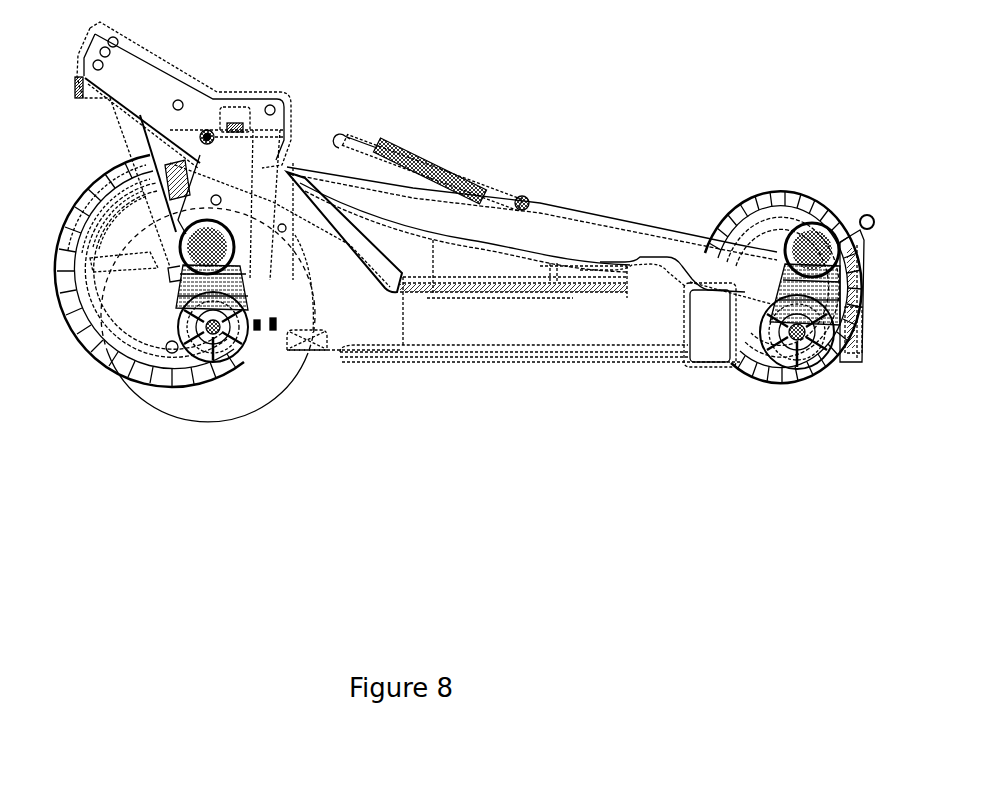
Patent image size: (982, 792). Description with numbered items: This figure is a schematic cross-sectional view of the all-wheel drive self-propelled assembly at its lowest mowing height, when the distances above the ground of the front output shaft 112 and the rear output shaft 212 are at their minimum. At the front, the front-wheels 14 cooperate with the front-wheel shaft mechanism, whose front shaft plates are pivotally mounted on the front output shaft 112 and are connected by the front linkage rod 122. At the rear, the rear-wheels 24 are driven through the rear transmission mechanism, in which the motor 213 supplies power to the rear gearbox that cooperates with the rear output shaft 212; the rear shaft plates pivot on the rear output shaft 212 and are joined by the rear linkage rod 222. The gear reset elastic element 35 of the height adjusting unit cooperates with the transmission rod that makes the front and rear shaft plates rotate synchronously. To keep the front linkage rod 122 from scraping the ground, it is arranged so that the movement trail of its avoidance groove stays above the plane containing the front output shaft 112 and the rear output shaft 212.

The motor 213 is at (90, 197).
The rear-wheels 24 is at (85, 333).
The rear linkage rod 222 is at (165, 355).
The rear output shaft 212 is at (302, 367).
The gear reset elastic element 35 is at (432, 157).
The front-wheels 14 is at (765, 192).
The front output shaft 112 is at (837, 363).
The front linkage rod 122 is at (853, 232).